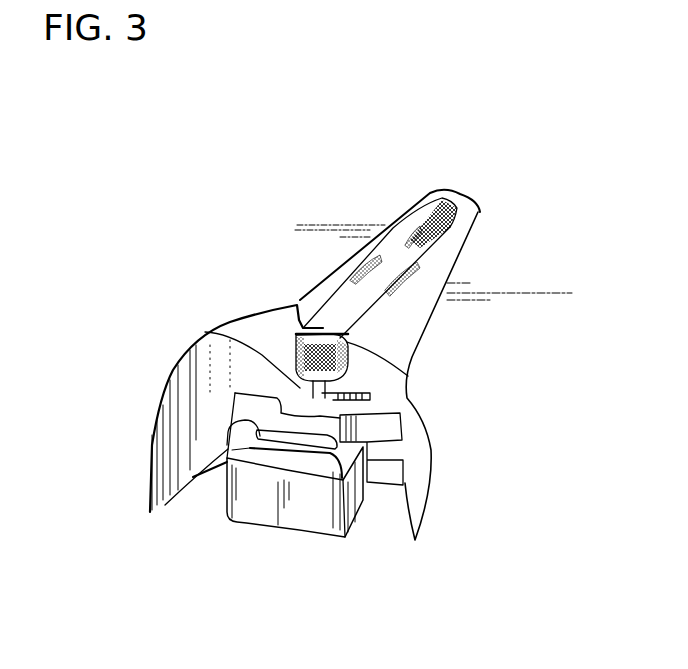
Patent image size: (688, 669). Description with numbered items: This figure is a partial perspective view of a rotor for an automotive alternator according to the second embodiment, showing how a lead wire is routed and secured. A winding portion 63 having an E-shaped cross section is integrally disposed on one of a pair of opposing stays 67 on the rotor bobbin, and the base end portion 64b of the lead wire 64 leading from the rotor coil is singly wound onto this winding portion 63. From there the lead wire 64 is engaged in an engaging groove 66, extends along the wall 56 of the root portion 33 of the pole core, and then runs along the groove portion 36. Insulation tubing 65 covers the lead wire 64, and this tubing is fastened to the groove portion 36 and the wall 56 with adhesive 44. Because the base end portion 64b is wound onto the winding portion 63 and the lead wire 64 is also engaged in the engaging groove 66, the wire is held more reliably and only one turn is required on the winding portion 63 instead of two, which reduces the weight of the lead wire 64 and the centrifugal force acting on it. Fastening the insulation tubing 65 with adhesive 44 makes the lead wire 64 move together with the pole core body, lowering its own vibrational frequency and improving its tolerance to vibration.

The root portion 33 is at (276, 330).
The groove portion 36 is at (410, 310).
The adhesive 44 is at (420, 277).
The wall 56 is at (262, 342).
The winding portion 63 is at (260, 503).
The lead wire 64 is at (217, 330).
The base end portion 64b is at (327, 527).
The insulation tubing 65 is at (415, 227).
The engaging groove 66 is at (322, 385).
The stay 67 is at (370, 400).